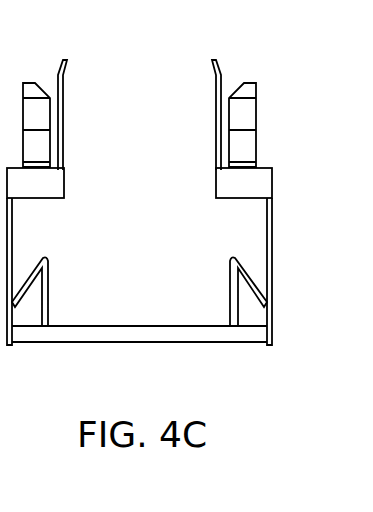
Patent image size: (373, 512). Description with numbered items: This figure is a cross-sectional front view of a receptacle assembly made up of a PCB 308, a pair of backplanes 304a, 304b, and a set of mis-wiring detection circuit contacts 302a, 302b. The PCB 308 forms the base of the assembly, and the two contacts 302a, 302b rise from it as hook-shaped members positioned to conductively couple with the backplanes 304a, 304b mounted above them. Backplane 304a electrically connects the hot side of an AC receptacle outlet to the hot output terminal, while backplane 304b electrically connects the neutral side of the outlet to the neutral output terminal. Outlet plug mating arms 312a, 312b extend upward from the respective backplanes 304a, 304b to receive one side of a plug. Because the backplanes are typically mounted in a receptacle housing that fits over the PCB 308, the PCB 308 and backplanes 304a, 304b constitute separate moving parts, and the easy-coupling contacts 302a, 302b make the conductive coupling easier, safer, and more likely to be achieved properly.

The mis-wiring detection circuit contact 302a is at (48, 297).
The mis-wiring detection circuit contact 302b is at (229, 299).
The backplane 304a is at (34, 188).
The backplane 304b is at (217, 186).
The PCB 308 is at (212, 342).
The outlet plug mating arms 312a is at (35, 81).
The outlet plug mating arms 312b is at (250, 83).